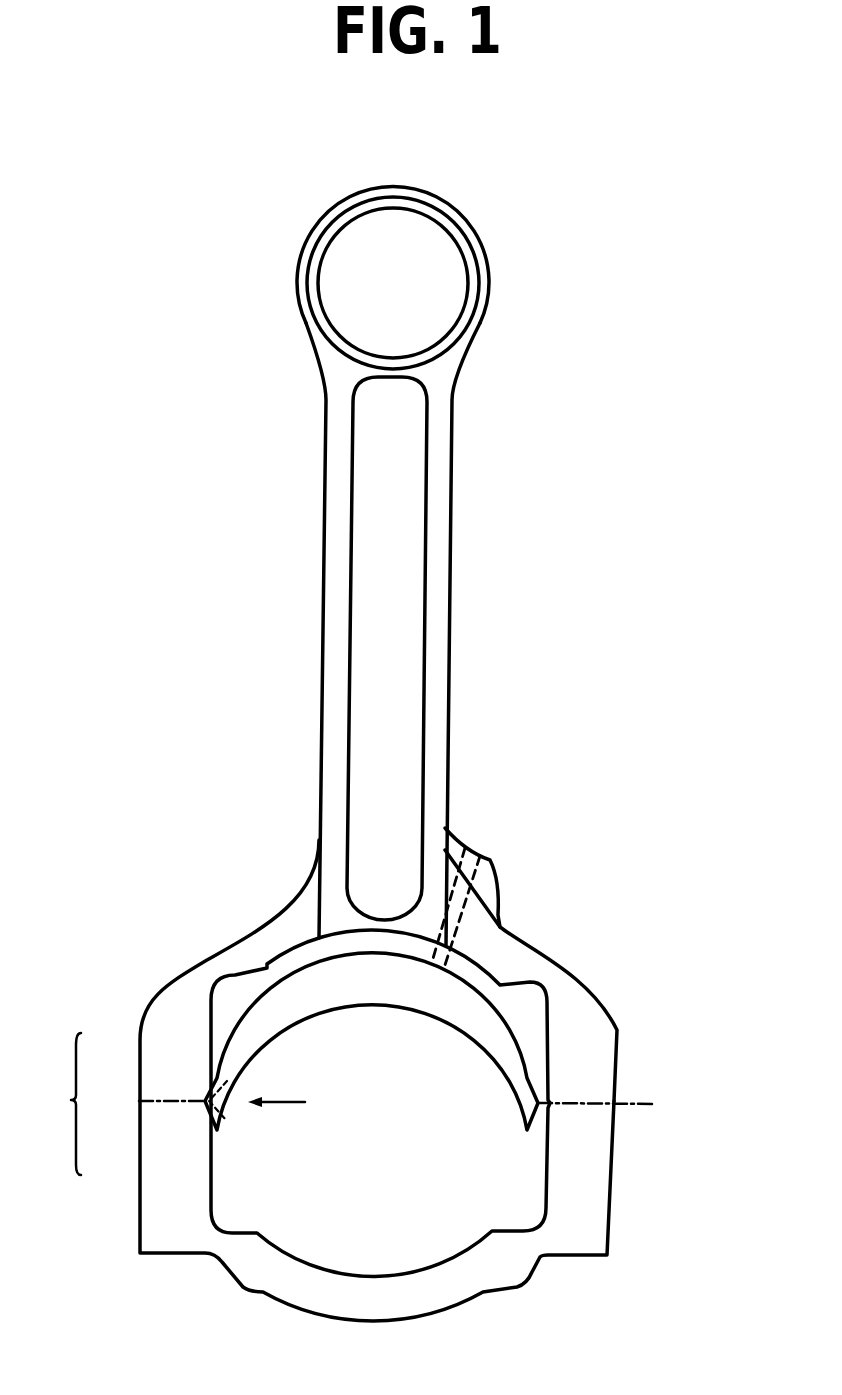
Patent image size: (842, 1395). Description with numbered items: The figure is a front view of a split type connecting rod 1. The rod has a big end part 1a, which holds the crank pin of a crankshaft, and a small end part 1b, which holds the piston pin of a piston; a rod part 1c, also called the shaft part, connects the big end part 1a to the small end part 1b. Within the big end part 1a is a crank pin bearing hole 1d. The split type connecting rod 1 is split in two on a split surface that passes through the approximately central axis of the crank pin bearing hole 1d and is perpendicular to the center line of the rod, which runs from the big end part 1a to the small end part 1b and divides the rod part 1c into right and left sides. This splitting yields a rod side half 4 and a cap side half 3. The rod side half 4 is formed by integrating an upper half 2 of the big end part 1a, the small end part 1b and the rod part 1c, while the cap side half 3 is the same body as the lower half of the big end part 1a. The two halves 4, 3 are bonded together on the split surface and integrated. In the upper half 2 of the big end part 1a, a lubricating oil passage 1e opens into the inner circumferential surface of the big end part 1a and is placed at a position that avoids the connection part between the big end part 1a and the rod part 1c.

The split type connecting rod 1 is at (560, 318).
The big end part 1a is at (718, 1030).
The small end part 1b is at (298, 292).
The rod part 1c is at (446, 787).
The crank pin bearing hole 1d is at (350, 958).
The lubricating oil passage 1e is at (478, 871).
The upper half of the big end part 2 is at (619, 1053).
The cap side half 3 is at (138, 1175).
The rod side half 4 is at (138, 1038).